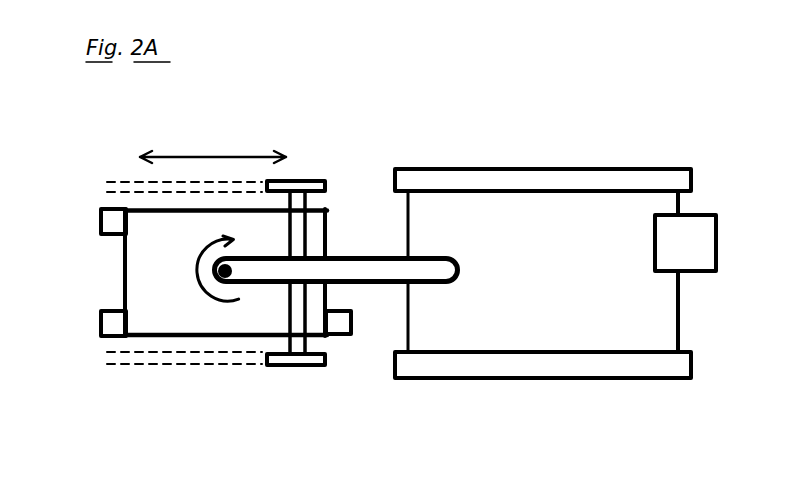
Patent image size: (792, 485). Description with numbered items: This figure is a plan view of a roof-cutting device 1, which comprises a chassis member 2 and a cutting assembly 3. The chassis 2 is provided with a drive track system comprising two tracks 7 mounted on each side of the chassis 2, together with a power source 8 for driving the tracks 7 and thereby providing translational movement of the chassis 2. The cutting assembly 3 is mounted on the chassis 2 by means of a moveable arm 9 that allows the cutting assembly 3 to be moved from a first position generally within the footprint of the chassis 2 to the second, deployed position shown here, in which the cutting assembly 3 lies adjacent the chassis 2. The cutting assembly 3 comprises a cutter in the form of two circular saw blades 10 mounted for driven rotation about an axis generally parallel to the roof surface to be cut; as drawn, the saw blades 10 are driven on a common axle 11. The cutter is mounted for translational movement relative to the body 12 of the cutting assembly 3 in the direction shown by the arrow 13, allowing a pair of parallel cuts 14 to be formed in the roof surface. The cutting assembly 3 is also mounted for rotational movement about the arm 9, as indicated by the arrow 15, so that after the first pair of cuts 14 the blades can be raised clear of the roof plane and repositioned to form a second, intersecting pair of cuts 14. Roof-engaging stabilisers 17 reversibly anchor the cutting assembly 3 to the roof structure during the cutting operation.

The device 1 is at (442, 85).
The chassis member 2 is at (527, 398).
The cutting assembly 3 is at (58, 285).
The tracks 7 is at (597, 167).
The power source 8 is at (698, 238).
The moveable arm 9 is at (385, 287).
The circular saw blades 10 is at (300, 186).
The common axle 11 is at (290, 308).
The body 12 is at (135, 287).
The arrow 13 is at (205, 153).
The parallel cuts 14 is at (120, 183).
The arrow 15 is at (192, 288).
The roof-engaging stabilisers 17 is at (100, 216).